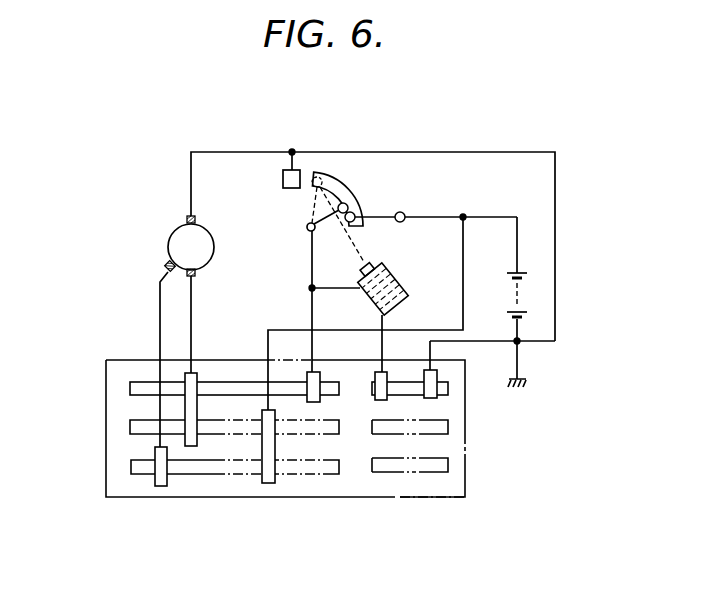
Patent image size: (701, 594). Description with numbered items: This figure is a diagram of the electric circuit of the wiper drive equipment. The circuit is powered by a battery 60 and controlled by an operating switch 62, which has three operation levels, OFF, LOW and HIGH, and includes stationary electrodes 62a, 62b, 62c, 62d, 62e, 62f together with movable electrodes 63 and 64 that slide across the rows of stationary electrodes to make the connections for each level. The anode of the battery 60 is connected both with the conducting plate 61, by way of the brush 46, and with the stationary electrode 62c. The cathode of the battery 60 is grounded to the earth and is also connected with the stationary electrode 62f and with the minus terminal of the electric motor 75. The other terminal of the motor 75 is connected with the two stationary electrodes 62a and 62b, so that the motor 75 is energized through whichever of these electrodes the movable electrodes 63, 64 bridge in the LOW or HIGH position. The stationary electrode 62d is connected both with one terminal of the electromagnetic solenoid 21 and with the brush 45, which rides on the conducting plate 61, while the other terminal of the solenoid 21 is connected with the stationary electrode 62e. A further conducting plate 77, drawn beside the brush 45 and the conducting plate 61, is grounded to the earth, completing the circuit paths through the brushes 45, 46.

The electromagnetic solenoid 21 is at (389, 274).
The brush 45 is at (309, 223).
The brush 46 is at (357, 212).
The battery 60 is at (520, 293).
The conducting plate 61 is at (340, 192).
The operating switch 62 is at (285, 461).
The stationary electrode 62a is at (160, 486).
The stationary electrode 62b is at (191, 446).
The stationary electrode 62c is at (268, 483).
The stationary electrode 62d is at (316, 402).
The stationary electrode 62e is at (378, 400).
The stationary electrode 62f is at (433, 398).
The movable electrode 63 is at (198, 390).
The movable electrode 64 is at (449, 385).
The electric motor 75 is at (168, 245).
The conducting plate 77 is at (283, 180).